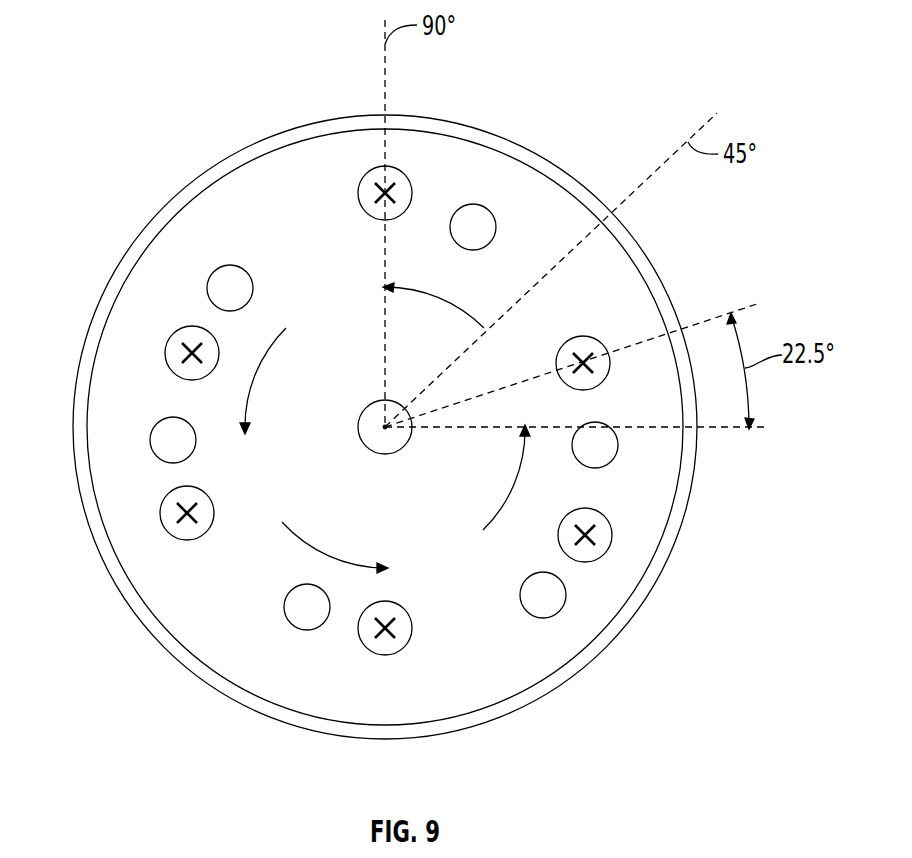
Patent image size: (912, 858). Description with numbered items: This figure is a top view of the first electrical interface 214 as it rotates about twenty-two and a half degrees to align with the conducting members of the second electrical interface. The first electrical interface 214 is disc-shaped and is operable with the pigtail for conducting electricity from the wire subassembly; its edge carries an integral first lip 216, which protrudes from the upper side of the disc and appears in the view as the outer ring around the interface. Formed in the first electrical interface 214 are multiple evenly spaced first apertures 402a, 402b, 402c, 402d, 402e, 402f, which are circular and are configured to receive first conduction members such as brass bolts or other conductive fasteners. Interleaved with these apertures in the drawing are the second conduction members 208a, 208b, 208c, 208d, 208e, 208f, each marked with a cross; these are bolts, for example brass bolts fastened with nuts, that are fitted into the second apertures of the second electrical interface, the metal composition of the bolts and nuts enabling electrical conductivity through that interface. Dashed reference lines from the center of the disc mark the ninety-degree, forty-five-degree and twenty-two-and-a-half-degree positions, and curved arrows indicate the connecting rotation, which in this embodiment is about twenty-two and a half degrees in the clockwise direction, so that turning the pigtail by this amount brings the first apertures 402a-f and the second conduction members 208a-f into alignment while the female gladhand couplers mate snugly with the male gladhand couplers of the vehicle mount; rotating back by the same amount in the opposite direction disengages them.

The first electrical interface 214 is at (476, 163).
The first lip 216 is at (435, 118).
The second conduction member 208a is at (368, 188).
The second conduction member 208b is at (598, 345).
The second conduction member 208c is at (593, 538).
The second conduction member 208d is at (397, 627).
The second conduction member 208e is at (182, 507).
The second conduction member 208f is at (183, 357).
The first aperture 402a is at (227, 265).
The first aperture 402b is at (487, 222).
The first aperture 402c is at (605, 450).
The first aperture 402d is at (558, 603).
The first aperture 402e is at (312, 606).
The first aperture 402f is at (150, 435).